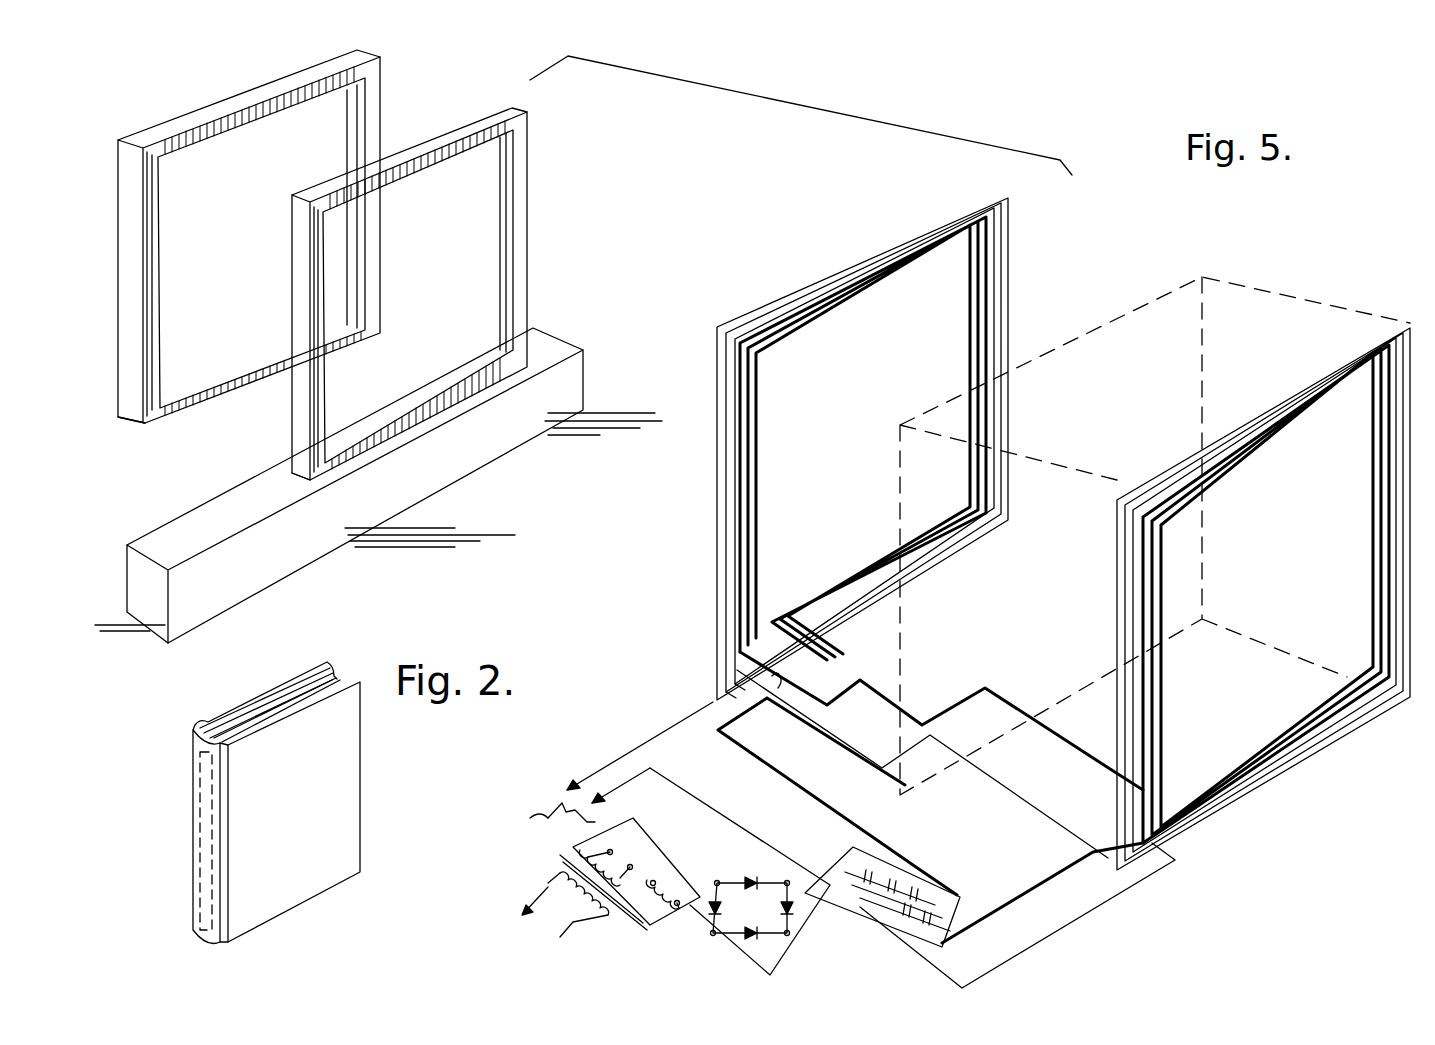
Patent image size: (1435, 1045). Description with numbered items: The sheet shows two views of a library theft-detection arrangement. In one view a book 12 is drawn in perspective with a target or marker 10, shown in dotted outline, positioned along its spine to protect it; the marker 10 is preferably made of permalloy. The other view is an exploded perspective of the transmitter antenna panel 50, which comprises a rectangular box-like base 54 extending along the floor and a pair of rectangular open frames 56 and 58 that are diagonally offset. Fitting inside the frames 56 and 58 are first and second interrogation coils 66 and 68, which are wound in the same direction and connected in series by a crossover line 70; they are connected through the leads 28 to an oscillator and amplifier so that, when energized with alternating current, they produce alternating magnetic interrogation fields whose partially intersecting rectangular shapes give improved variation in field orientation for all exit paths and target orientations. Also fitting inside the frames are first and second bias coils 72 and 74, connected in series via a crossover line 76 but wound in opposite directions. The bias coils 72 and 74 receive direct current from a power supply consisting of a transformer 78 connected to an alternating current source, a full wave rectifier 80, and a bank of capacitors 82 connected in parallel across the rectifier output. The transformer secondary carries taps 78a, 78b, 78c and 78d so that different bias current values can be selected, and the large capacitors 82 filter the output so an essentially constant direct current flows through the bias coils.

In FIG. 2, the target or marker 10 is at (200, 778).
In FIG. 2, the book 12 is at (285, 680).
In FIG. 2, the transmitter antenna panel 50 is at (424, 119).
In FIG. 2, the base 54 is at (198, 527).
In FIG. 2, the rectangular open frame 56 is at (300, 417).
In FIG. 2, the rectangular open frame 58 is at (192, 398).
In FIG. 5, the leads 28 is at (620, 770).
In FIG. 5, the first interrogation coil 66 is at (840, 272).
In FIG. 5, the second interrogation coil 68 is at (1287, 397).
In FIG. 5, the crossover line 70 is at (1040, 813).
In FIG. 5, the first bias coil 72 is at (845, 306).
In FIG. 5, the second bias coil 74 is at (1282, 448).
In FIG. 5, the crossover line 76 is at (1006, 697).
In FIG. 5, the transformer 78 is at (545, 862).
In FIG. 5, the tap 78a is at (612, 860).
In FIG. 5, the tap 78b is at (630, 867).
In FIG. 5, the tap 78c is at (665, 894).
In FIG. 5, the tap 78d is at (672, 912).
In FIG. 5, the full wave rectifier 80 is at (762, 877).
In FIG. 5, the bank of capacitors 82 is at (913, 870).